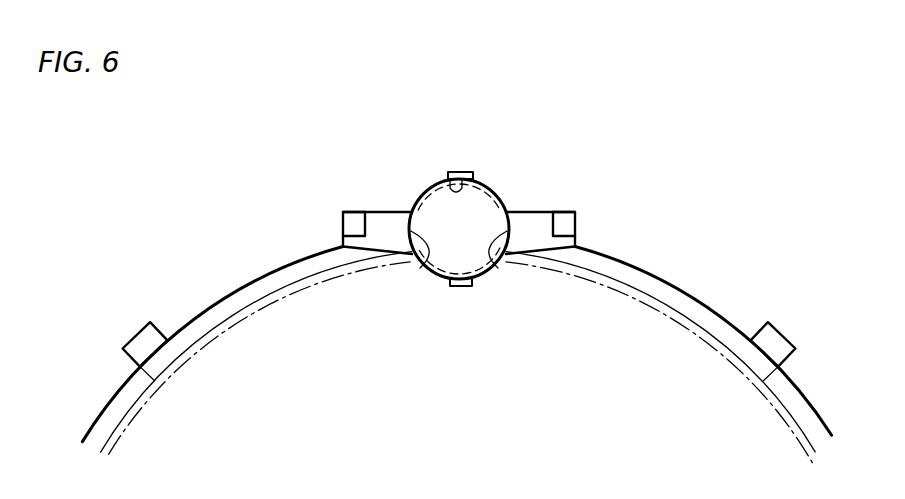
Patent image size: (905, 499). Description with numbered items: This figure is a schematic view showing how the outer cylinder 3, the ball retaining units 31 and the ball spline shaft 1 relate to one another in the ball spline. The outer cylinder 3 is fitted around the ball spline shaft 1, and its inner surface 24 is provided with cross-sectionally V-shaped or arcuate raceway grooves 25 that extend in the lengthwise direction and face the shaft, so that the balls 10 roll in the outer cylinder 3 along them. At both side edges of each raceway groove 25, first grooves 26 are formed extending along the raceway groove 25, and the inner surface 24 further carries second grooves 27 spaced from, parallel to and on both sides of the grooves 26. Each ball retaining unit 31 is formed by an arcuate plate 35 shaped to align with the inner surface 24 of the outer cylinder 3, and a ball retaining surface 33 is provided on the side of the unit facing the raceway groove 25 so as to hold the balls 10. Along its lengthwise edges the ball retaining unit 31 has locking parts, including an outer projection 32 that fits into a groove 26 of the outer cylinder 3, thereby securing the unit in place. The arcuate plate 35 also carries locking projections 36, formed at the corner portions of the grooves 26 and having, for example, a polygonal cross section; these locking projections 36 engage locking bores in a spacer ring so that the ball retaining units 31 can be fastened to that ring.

The ball spline shaft 1 is at (346, 305).
The outer cylinder 3 is at (445, 283).
The balls 10 is at (459, 250).
The inner surface 24 is at (178, 328).
The raceway grooves 25 is at (458, 172).
The grooves 26 is at (345, 212).
The grooves 27 is at (134, 330).
The ball retaining unit 31 is at (272, 271).
The outer projection 32 is at (392, 222).
The ball retaining surface 33 is at (428, 268).
The arcuate plate 35 is at (237, 307).
The locking projections 36 is at (353, 228).